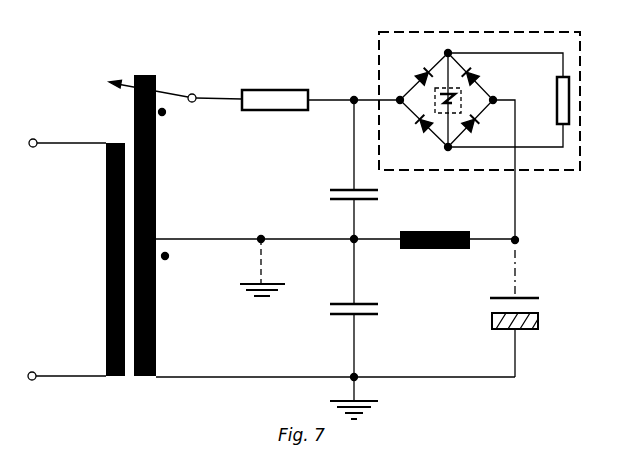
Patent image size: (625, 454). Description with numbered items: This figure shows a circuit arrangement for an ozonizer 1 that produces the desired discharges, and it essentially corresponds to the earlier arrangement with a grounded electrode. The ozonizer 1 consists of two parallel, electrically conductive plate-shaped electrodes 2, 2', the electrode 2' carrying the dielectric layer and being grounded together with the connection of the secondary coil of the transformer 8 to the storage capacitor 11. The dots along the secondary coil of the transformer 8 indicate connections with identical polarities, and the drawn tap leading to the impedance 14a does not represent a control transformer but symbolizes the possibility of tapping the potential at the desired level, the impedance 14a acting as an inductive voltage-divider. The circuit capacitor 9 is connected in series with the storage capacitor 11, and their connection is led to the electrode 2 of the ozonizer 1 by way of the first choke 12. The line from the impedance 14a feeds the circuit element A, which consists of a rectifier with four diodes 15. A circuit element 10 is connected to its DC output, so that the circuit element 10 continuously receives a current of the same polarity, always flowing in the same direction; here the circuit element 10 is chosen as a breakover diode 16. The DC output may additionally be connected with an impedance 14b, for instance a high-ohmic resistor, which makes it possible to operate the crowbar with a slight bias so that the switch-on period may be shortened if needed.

The transformer 8 is at (129, 141).
The impedance 14a is at (262, 90).
The circuit element A is at (379, 45).
The circuit element 10 is at (463, 103).
The diode 15 is at (412, 127).
The breakover diode 16 is at (447, 110).
The impedance 14b is at (557, 112).
The circuit capacitor 9 is at (327, 191).
The first choke 12 is at (425, 250).
The electrode 2 is at (499, 279).
The ozonizer 1 is at (483, 311).
The electrode 2' is at (499, 345).
The storage capacitor 11 is at (338, 314).